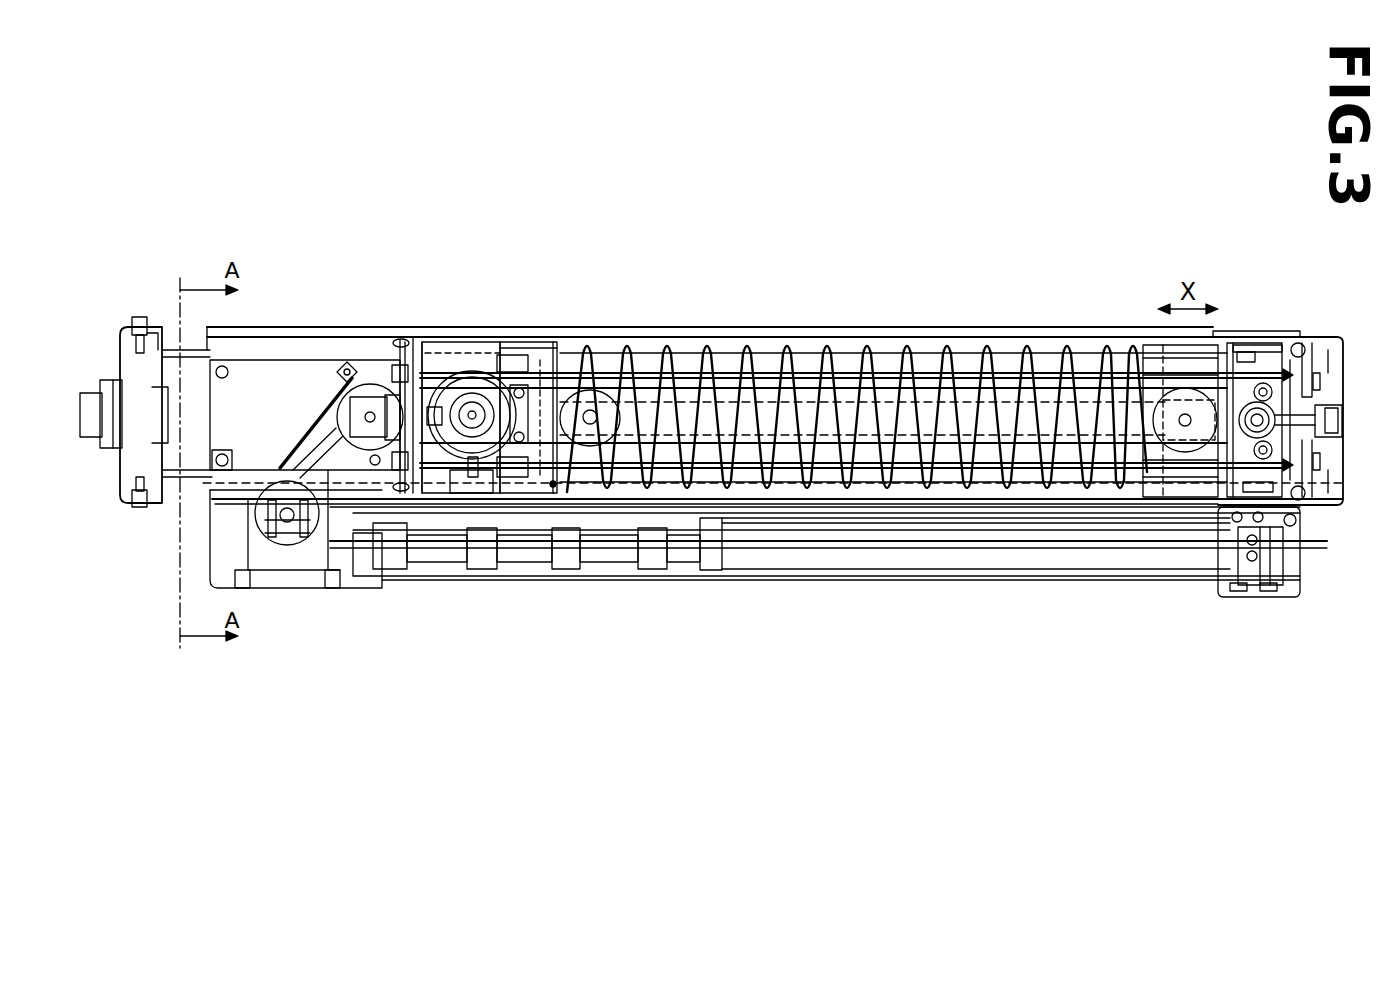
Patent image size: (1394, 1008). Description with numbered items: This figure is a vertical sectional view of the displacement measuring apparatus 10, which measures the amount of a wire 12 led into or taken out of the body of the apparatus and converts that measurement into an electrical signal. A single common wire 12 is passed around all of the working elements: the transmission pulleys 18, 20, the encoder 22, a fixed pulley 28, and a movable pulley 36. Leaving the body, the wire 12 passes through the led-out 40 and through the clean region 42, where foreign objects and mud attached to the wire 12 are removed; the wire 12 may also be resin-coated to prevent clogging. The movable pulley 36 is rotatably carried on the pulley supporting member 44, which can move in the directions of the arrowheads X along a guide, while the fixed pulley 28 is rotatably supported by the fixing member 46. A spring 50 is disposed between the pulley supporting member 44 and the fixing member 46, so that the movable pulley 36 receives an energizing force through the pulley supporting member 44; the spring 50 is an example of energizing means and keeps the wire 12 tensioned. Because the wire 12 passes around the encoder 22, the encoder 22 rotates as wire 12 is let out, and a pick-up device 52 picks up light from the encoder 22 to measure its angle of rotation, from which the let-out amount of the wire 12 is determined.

The displacement measuring apparatus 10 is at (716, 284).
The wire 12 is at (962, 348).
The transmission pulley 18 is at (288, 548).
The transmission pulley 20 is at (372, 383).
The encoder 22 is at (470, 371).
The fixed pulley 28 is at (607, 350).
The movable pulley 36 is at (1228, 348).
The led-out 40 is at (1313, 575).
The clean region 42 is at (572, 588).
The pulley supporting member 44 is at (1142, 348).
The fixing member 46 is at (538, 348).
The spring 50 is at (898, 348).
The pick-up device 52 is at (430, 378).